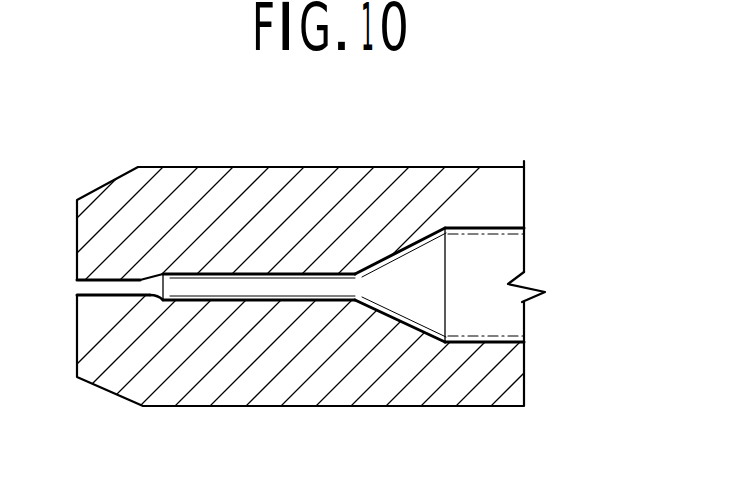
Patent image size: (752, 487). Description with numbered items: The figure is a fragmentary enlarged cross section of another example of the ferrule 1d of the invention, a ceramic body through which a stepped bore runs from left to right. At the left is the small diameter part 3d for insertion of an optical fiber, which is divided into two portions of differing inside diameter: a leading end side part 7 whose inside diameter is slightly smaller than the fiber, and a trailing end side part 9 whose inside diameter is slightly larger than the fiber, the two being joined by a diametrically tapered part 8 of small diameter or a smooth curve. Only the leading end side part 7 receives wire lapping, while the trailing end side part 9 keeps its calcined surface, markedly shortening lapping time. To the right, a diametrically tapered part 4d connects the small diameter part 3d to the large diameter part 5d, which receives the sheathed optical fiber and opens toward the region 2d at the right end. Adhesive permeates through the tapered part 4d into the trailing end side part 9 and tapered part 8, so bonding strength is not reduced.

The ferrule 1d is at (426, 158).
The inlet bore 2d is at (498, 257).
The small diameter part 3d is at (232, 258).
The diametrically tapered part 4d is at (406, 318).
The large diameter part 5d is at (490, 343).
The leading end side part 7 is at (96, 290).
The diametrically tapered part of a small diameter 8 is at (165, 298).
The trailing end side part 9 is at (269, 299).